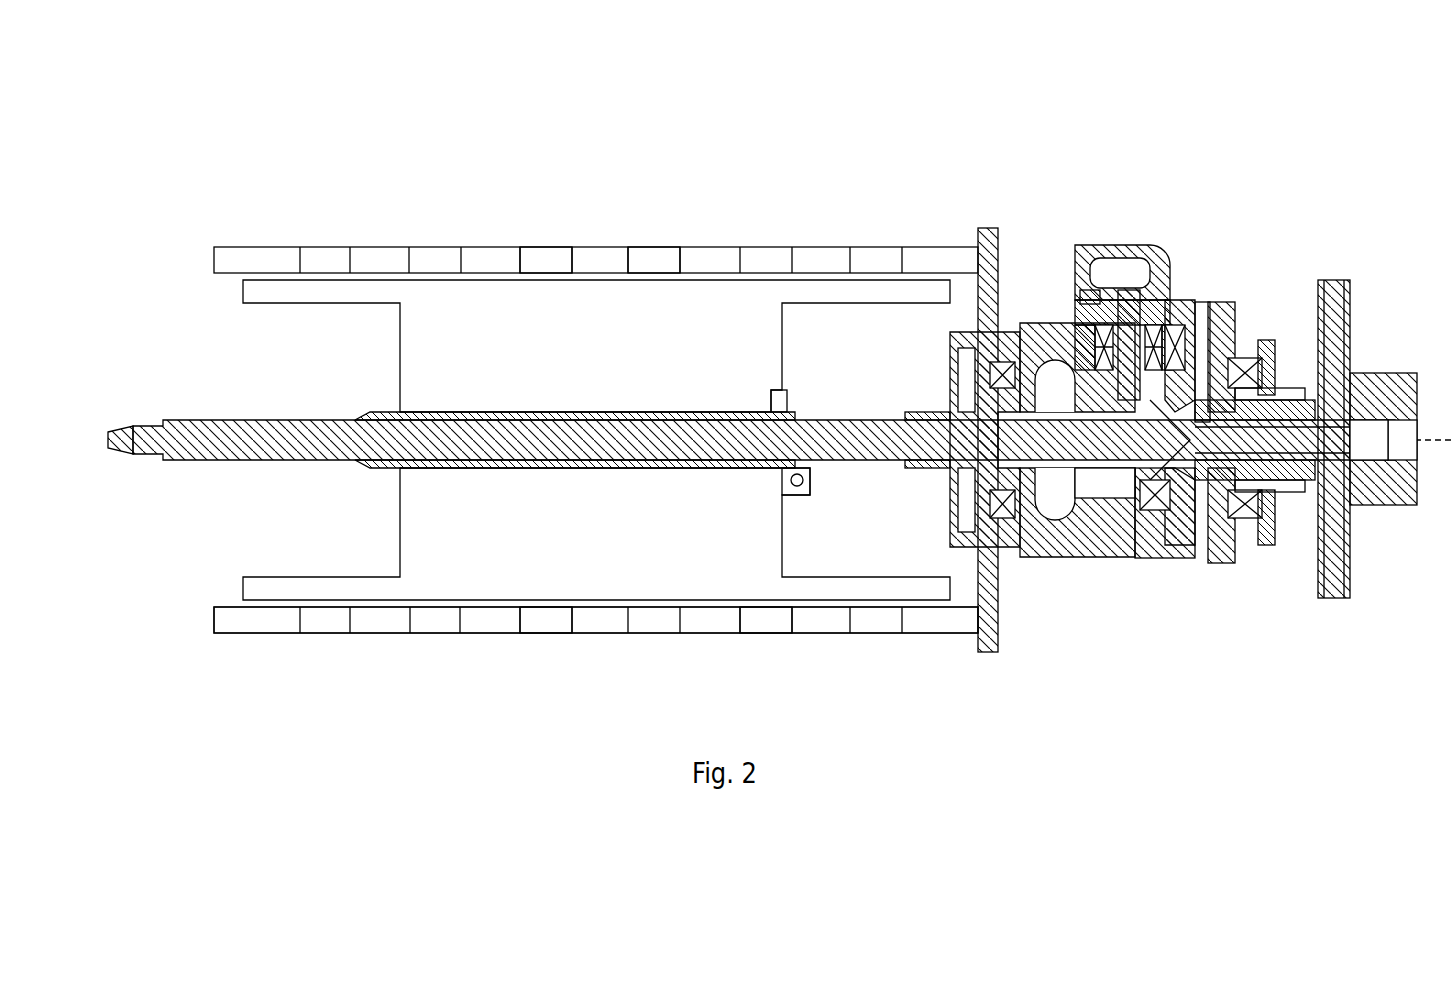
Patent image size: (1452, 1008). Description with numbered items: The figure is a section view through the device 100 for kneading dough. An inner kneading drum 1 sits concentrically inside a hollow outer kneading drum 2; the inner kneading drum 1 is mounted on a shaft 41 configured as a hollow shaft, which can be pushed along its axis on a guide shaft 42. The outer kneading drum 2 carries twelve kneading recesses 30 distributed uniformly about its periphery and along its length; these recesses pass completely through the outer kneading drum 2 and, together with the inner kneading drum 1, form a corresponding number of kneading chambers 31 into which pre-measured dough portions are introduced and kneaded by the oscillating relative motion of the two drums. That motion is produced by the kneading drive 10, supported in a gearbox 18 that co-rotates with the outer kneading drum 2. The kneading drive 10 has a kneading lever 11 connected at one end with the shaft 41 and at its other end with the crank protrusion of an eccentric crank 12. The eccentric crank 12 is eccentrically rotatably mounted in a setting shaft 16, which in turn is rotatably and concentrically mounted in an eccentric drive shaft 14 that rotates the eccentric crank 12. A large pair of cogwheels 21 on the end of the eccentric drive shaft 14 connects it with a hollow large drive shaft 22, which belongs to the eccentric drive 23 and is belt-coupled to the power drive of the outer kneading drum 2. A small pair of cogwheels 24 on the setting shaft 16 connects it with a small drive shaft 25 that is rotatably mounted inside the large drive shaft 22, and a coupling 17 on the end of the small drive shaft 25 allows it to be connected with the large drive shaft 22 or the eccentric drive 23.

The inner kneading drum 1 is at (522, 328).
The outer kneading drum 2 is at (655, 618).
The kneading drive 10 is at (1203, 283).
The kneading lever 11 is at (1083, 258).
The eccentric crank 12 is at (1130, 290).
The eccentric drive shaft 14 is at (1167, 298).
The setting shaft 16 is at (1075, 292).
The coupling 17 is at (1392, 487).
The gearbox 18 is at (1072, 540).
The large pair of cogwheels 21 is at (1226, 330).
The large drive shaft 22 is at (1266, 343).
The eccentric drive 23 is at (1370, 324).
The small pair of cogwheels 24 is at (1172, 560).
The small drive shaft 25 is at (1265, 548).
The kneading recesses 30 is at (880, 262).
The kneading chambers 31 is at (562, 281).
The shaft 41 is at (752, 468).
The guide shaft 42 is at (326, 440).
The device for kneading dough 100 is at (1048, 676).